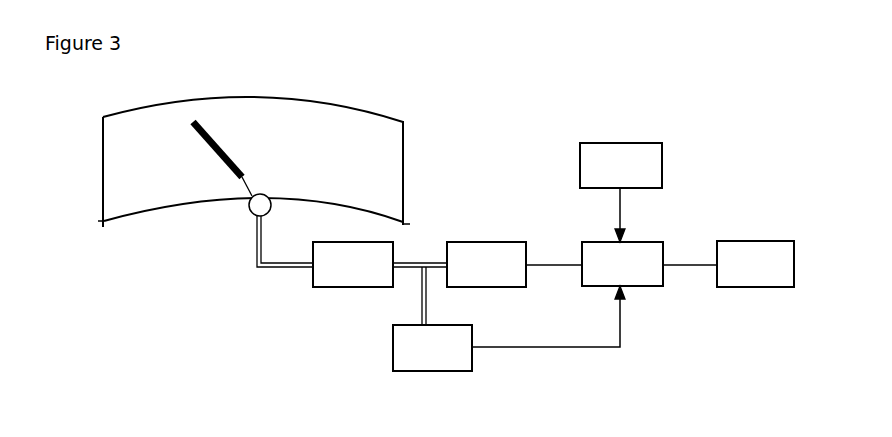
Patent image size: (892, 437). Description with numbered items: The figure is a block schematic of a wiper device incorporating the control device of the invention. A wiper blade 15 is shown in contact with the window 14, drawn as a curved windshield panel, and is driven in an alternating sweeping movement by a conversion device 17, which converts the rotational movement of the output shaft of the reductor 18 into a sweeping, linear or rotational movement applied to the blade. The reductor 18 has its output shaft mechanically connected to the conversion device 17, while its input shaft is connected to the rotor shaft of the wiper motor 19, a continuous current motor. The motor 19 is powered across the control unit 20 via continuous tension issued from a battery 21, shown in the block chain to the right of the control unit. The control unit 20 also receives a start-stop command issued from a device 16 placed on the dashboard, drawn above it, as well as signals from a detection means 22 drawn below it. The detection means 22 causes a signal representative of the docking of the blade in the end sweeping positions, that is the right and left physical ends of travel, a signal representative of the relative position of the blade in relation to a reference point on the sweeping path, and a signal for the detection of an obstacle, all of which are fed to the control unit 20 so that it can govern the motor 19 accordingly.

The window 14 is at (133, 123).
The wiper blade 15 is at (212, 150).
The start-stop command device 16 is at (621, 192).
The conversion device 17 is at (247, 208).
The reductor 18 is at (380, 264).
The wiper motor 19 is at (514, 264).
The control unit 20 is at (649, 264).
The battery 21 is at (755, 264).
The detection means 22 is at (509, 319).